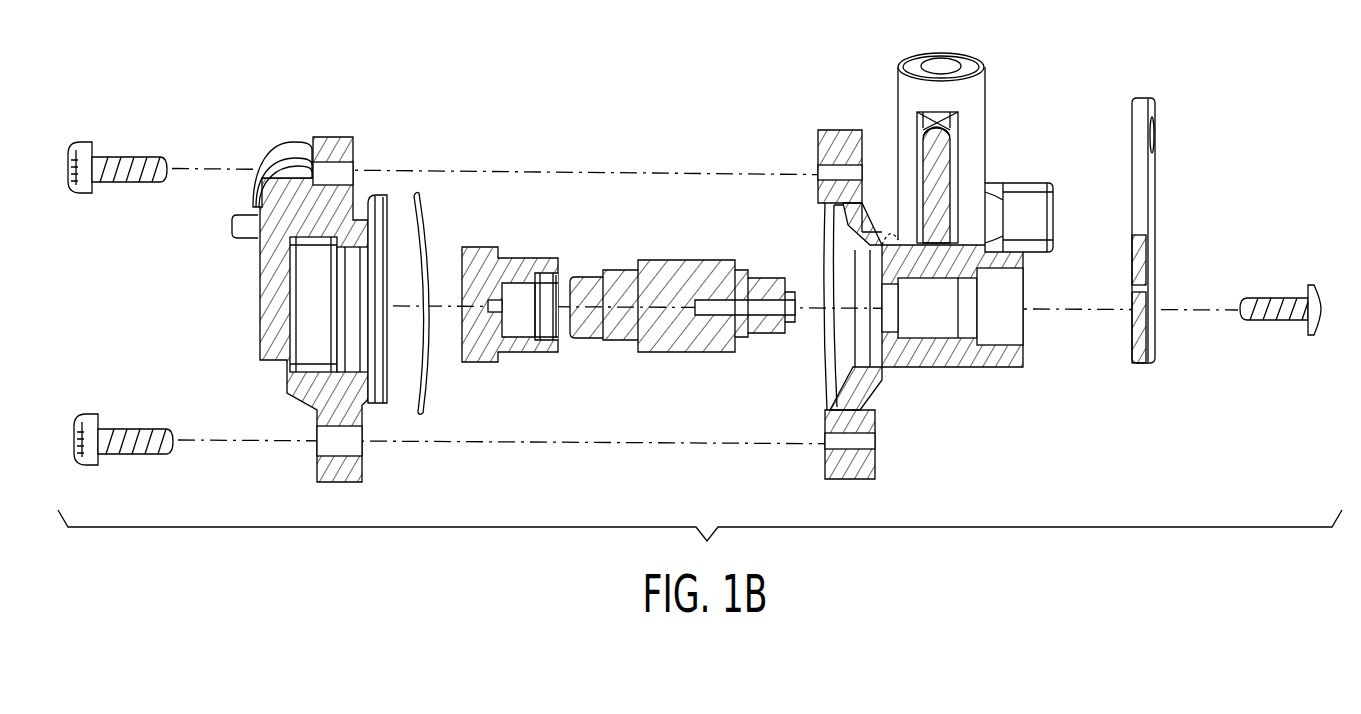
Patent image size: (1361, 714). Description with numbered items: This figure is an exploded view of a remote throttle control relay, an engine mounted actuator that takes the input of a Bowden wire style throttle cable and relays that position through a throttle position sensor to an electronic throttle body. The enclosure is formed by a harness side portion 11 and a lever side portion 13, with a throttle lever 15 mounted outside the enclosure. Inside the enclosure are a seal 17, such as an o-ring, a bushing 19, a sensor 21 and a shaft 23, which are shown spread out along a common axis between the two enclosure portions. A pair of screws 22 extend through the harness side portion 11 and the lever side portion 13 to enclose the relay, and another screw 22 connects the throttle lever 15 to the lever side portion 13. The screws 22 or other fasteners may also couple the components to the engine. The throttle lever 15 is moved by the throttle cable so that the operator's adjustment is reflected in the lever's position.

The harness side portion 11 is at (290, 150).
The lever side portion 13 is at (915, 58).
The lever 15 is at (1143, 135).
The seal 17 is at (433, 228).
The bushing 19 is at (935, 347).
The sensor 21 is at (527, 268).
The screws 22 is at (125, 166).
The shaft 23 is at (678, 272).